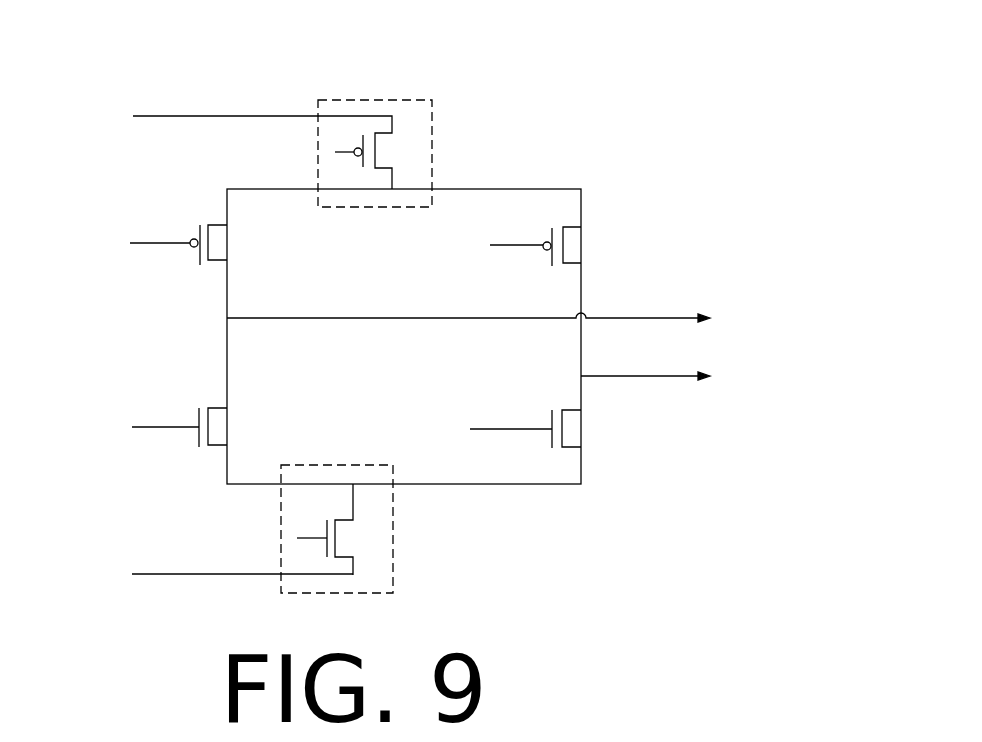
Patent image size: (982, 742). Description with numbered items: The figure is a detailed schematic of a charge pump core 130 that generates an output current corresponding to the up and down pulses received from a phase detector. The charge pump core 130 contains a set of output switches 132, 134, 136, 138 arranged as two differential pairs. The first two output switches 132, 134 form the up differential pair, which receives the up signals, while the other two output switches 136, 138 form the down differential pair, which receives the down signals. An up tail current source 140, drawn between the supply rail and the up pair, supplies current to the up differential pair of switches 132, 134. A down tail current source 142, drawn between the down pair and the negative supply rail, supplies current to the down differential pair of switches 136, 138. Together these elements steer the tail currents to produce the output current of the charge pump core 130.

The charge pump core 130 is at (565, 82).
The output switch 132 is at (228, 280).
The output switch 134 is at (582, 283).
The output switch 136 is at (228, 390).
The output switch 138 is at (580, 392).
The up tail current source 140 is at (356, 98).
The down tail current source 142 is at (393, 558).